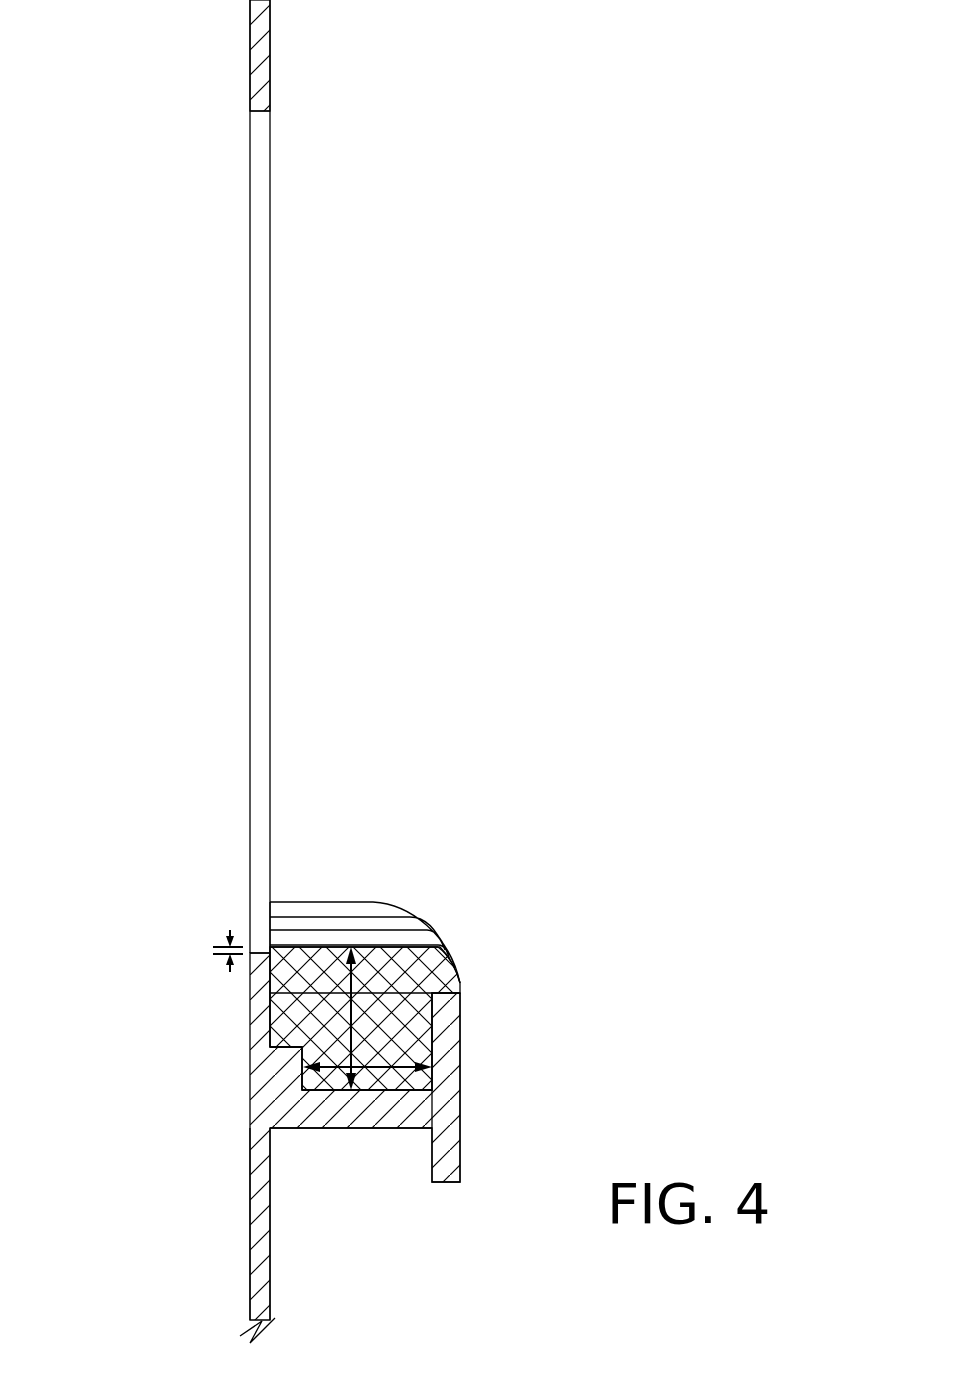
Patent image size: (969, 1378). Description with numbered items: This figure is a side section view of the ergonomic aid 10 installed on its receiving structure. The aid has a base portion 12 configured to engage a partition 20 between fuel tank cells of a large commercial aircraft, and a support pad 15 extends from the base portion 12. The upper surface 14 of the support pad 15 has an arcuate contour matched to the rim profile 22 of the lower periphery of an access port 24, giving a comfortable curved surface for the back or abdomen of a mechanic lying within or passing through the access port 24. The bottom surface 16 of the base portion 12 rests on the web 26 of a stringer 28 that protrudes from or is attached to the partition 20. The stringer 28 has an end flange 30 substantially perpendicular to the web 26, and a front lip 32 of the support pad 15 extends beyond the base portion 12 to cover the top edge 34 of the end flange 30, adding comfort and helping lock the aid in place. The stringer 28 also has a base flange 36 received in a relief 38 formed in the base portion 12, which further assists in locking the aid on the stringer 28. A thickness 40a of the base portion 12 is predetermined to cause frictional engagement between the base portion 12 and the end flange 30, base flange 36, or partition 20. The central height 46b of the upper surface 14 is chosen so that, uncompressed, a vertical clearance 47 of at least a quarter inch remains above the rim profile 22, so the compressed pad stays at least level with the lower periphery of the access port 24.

The ergonomic aid 10 is at (345, 847).
The base portion 12 is at (373, 1043).
The upper surface 14 is at (352, 925).
The support pad 15 is at (383, 967).
The bottom surface 16 is at (405, 1088).
The partition 20 is at (270, 62).
The rim profile 22 is at (262, 953).
The access port 24 is at (258, 510).
The web 26 is at (328, 1113).
The stringer 28 is at (510, 1107).
The end flange 30 is at (447, 1080).
The front lip 32 is at (448, 983).
The top edge 34 is at (440, 997).
The base flange 36 is at (282, 1068).
The relief 38 is at (282, 1048).
The thickness 40a is at (376, 1067).
The central height 46b is at (350, 1008).
The vertical clearance 47 is at (230, 930).